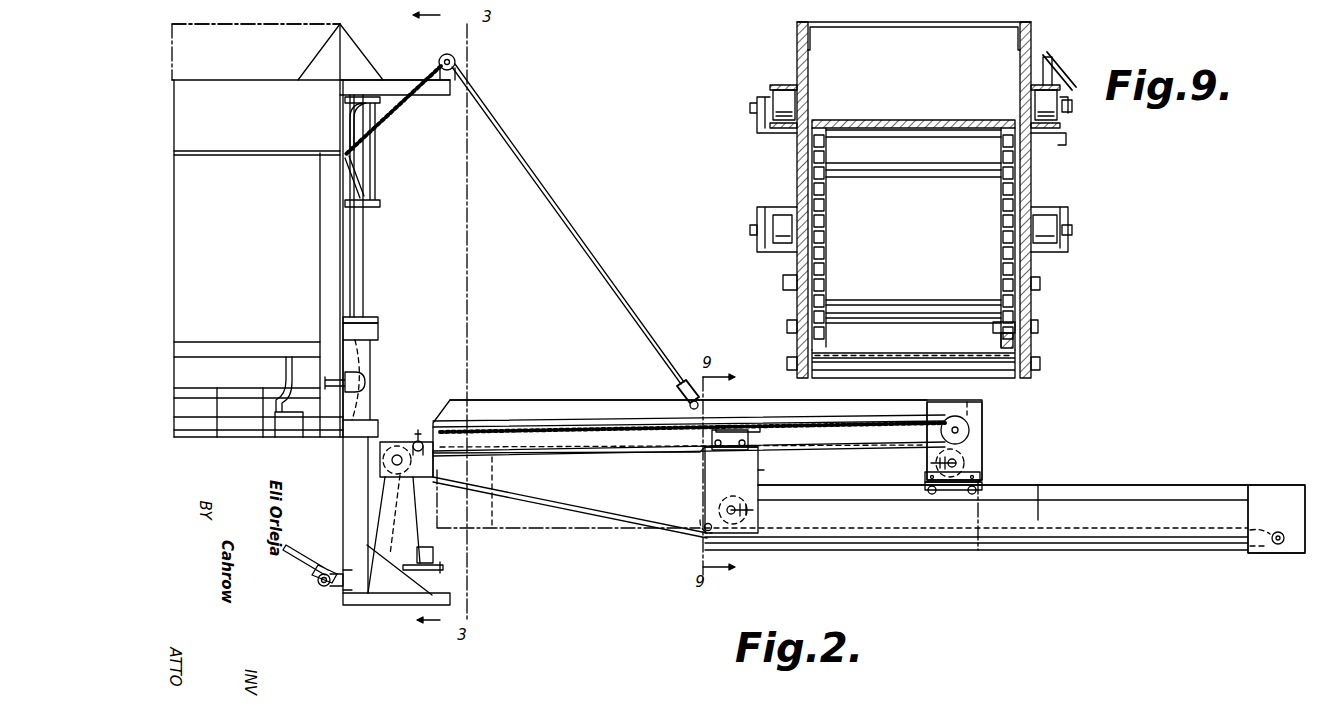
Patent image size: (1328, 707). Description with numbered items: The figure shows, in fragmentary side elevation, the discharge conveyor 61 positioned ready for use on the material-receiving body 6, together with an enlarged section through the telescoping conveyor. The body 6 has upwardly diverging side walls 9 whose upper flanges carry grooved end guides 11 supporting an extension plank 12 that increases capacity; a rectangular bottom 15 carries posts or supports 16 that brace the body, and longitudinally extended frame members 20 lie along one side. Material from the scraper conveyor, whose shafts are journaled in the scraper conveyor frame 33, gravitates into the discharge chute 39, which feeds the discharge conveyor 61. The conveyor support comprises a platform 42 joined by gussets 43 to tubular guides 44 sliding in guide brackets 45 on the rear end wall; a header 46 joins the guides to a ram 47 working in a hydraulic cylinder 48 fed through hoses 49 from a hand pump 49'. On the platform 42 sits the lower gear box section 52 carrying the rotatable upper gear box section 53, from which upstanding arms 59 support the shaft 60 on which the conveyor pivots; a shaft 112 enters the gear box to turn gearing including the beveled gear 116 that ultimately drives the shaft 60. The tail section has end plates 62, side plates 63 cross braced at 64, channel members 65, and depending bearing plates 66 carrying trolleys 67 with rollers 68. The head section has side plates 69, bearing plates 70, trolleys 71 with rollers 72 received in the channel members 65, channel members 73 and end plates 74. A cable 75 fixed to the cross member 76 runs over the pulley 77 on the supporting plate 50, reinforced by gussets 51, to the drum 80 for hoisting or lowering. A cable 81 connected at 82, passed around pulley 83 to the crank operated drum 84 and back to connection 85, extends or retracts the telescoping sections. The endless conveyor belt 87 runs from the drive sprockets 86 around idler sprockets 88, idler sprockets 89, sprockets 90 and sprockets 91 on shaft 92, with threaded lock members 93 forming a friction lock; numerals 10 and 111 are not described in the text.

In FIG. 2, the material-receiving body 6 is at (220, 80).
In FIG. 2, the side walls 9 is at (175, 256).
In FIG. 2, the deck 10 is at (267, 80).
In FIG. 2, the grooved end guides 11 is at (318, 42).
In FIG. 2, the extension plank 12 is at (250, 24).
In FIG. 2, the rectangular bottom 15 is at (228, 437).
In FIG. 2, the posts or supports 16 is at (320, 282).
In FIG. 2, the frame members 20 is at (244, 345).
In FIG. 2, the scraper conveyor frame 33 is at (188, 437).
In FIG. 2, the discharge chute 39 is at (378, 420).
In FIG. 2, the platform 42 is at (391, 605).
In FIG. 2, the gussets 43 is at (432, 590).
In FIG. 2, the tubular guides 44 is at (345, 492).
In FIG. 2, the guide brackets 45 is at (380, 333).
In FIG. 2, the header 46 is at (378, 320).
In FIG. 2, the ram 47 is at (365, 262).
In FIG. 2, the hydraulic cylinder 48 is at (377, 172).
In FIG. 2, the hoses 49 is at (329, 150).
In FIG. 2, the hand pump 49' is at (287, 409).
In FIG. 2, the supporting plate 50 is at (398, 80).
In FIG. 2, the gussets 51 is at (362, 56).
In FIG. 2, the lower gear box section 52 is at (447, 572).
In FIG. 2, the upper gear box section 53 is at (435, 553).
In FIG. 2, the upstanding arms 59 is at (386, 532).
In FIG. 2, the shaft 60 is at (391, 458).
In FIG. 2, the discharge conveyor 61 is at (572, 400).
In FIG. 9, the discharge conveyor 61 is at (1035, 308).
In FIG. 2, the end plates 62 is at (383, 467).
In FIG. 2, the side plates 63 is at (509, 400).
In FIG. 9, the side plates 63 is at (797, 58).
In FIG. 9, the cross braces 64 is at (902, 27).
In FIG. 2, the channel member 65 is at (585, 424).
In FIG. 9, the channel member 65 is at (770, 87).
In FIG. 2, the depending bearing plates 66 is at (984, 444).
In FIG. 2, the trolleys 67 is at (984, 478).
In FIG. 9, the trolleys 67 is at (762, 206).
In FIG. 2, the rollers 68 is at (970, 492).
In FIG. 9, the rollers 68 is at (772, 215).
In FIG. 2, the side plates 69 is at (1100, 527).
In FIG. 2, the bearing plates 70 is at (495, 477).
In FIG. 9, the bearing plates 70 is at (790, 270).
In FIG. 2, the trolleys 71 is at (735, 430).
In FIG. 9, the trolleys 71 is at (758, 124).
In FIG. 2, the rollers 72 is at (762, 428).
In FIG. 9, the rollers 72 is at (790, 100).
In FIG. 2, the channel members 73 is at (1097, 485).
In FIG. 2, the end plates 74 is at (1275, 490).
In FIG. 9, the end plates 74 is at (797, 345).
In FIG. 2, the cable 75 is at (632, 310).
In FIG. 2, the cross member 76 is at (680, 392).
In FIG. 2, the pulley 77 is at (458, 62).
In FIG. 2, the drum 80 is at (358, 381).
In FIG. 2, the cable 81 is at (843, 425).
In FIG. 9, the cable 81 is at (1070, 80).
In FIG. 2, the connection 82 is at (768, 451).
In FIG. 2, the pulley 83 is at (970, 430).
In FIG. 9, the pulley 83 is at (1052, 56).
In FIG. 2, the crank operated drum 84 is at (420, 432).
In FIG. 2, the connection 85 is at (700, 455).
In FIG. 2, the drive sprockets 86 is at (397, 515).
In FIG. 2, the endless conveyor belt 87 is at (567, 504).
In FIG. 9, the endless conveyor belt 87 is at (919, 352).
In FIG. 2, the idler sprockets 88 is at (705, 525).
In FIG. 9, the idler sprockets 88 is at (998, 330).
In FIG. 2, the idler sprockets 89 is at (1258, 556).
In FIG. 2, the sprockets 90 is at (747, 492).
In FIG. 9, the sprockets 90 is at (1038, 288).
In FIG. 2, the sprockets 91 is at (982, 460).
In FIG. 9, the sprockets 91 is at (824, 211).
In FIG. 2, the shaft 92 is at (925, 477).
In FIG. 9, the shaft 92 is at (915, 178).
In FIG. 2, the threaded lock members 93 is at (928, 462).
In FIG. 2, the piston 111 is at (322, 587).
In FIG. 2, the shaft 112 is at (350, 600).
In FIG. 2, the beveled gear 116 is at (300, 555).